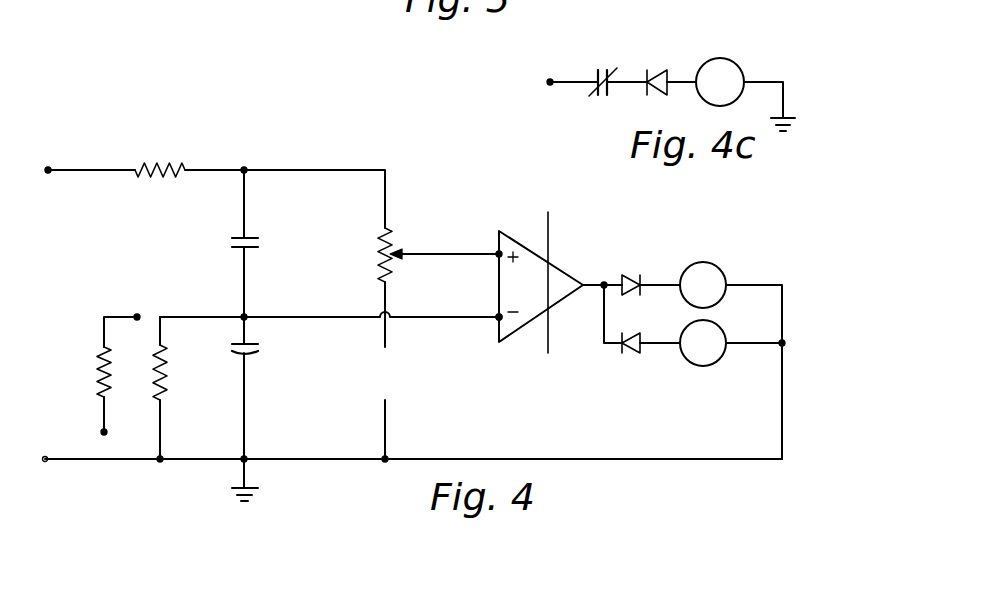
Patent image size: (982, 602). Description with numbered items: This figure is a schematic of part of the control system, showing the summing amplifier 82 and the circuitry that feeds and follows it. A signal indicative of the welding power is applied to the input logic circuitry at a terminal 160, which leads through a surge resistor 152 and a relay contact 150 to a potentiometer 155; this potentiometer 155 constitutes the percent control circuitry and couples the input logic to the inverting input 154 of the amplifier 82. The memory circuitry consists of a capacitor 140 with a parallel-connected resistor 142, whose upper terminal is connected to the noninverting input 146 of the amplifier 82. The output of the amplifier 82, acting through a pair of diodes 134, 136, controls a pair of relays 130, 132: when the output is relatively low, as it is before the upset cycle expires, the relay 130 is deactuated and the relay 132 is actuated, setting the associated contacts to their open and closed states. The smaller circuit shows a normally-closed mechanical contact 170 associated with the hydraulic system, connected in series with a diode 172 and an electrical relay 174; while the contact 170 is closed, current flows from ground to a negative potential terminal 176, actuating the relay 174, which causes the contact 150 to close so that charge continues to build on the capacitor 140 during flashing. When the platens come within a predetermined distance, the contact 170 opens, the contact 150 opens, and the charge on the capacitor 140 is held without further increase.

In FIG. 4, the terminal 160 is at (48, 168).
In FIG. 4, the surge resistor 152 is at (157, 162).
In FIG. 4, the relay contact 150 is at (262, 247).
In FIG. 4, the resistor 142 is at (165, 372).
In FIG. 4, the capacitor 140 is at (262, 352).
In FIG. 4, the potentiometer 155 is at (390, 248).
In FIG. 4, the inverting input 154 is at (497, 250).
In FIG. 4, the noninverting input 146 is at (500, 321).
In FIG. 4, the summing amplifier 82 is at (506, 236).
In FIG. 4, the diode 134 is at (630, 275).
In FIG. 4, the diode 136 is at (634, 353).
In FIG. 4, the relay 130 is at (711, 264).
In FIG. 4, the relay 132 is at (713, 367).
In FIG. 4C, the negative potential terminal 176 is at (548, 78).
In FIG. 4C, the mechanical contact 170 is at (603, 68).
In FIG. 4C, the diode 172 is at (658, 70).
In FIG. 4C, the electrical relay 174 is at (727, 59).